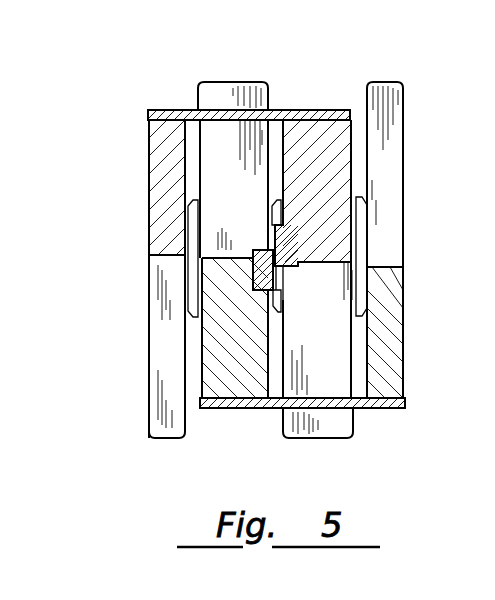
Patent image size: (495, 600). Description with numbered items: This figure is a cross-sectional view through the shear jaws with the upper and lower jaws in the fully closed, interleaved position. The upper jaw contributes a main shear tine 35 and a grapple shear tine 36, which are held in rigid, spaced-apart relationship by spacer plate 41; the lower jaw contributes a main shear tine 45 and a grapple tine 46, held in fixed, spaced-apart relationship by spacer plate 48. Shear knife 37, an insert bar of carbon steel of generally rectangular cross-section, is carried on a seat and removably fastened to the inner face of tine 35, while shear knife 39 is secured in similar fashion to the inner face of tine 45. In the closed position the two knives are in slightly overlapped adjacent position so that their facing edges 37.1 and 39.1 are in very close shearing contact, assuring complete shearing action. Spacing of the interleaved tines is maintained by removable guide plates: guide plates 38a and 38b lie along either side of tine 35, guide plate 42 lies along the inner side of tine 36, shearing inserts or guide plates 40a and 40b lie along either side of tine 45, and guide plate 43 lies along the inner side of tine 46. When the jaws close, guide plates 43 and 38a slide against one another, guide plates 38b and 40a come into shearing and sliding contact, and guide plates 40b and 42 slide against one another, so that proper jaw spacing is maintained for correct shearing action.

The main shear tine 35 is at (233, 82).
The grapple shear tine 36 is at (374, 82).
The shear knife 37 is at (262, 290).
The edge of shear knife 37.1 is at (268, 243).
The guide plate 38a is at (190, 213).
The guide plate 38b is at (271, 210).
The shear knife 39 is at (293, 225).
The edge of shear knife 39.1 is at (282, 274).
The guide plate 40a is at (286, 303).
The guide plate 40b is at (357, 287).
The spacer plate 41 is at (247, 412).
The guide plate 42 is at (367, 210).
The guide plate 43 is at (187, 293).
The main shear tine 45 is at (314, 440).
The grapple tine 46 is at (169, 442).
The spacer plate 48 is at (299, 110).